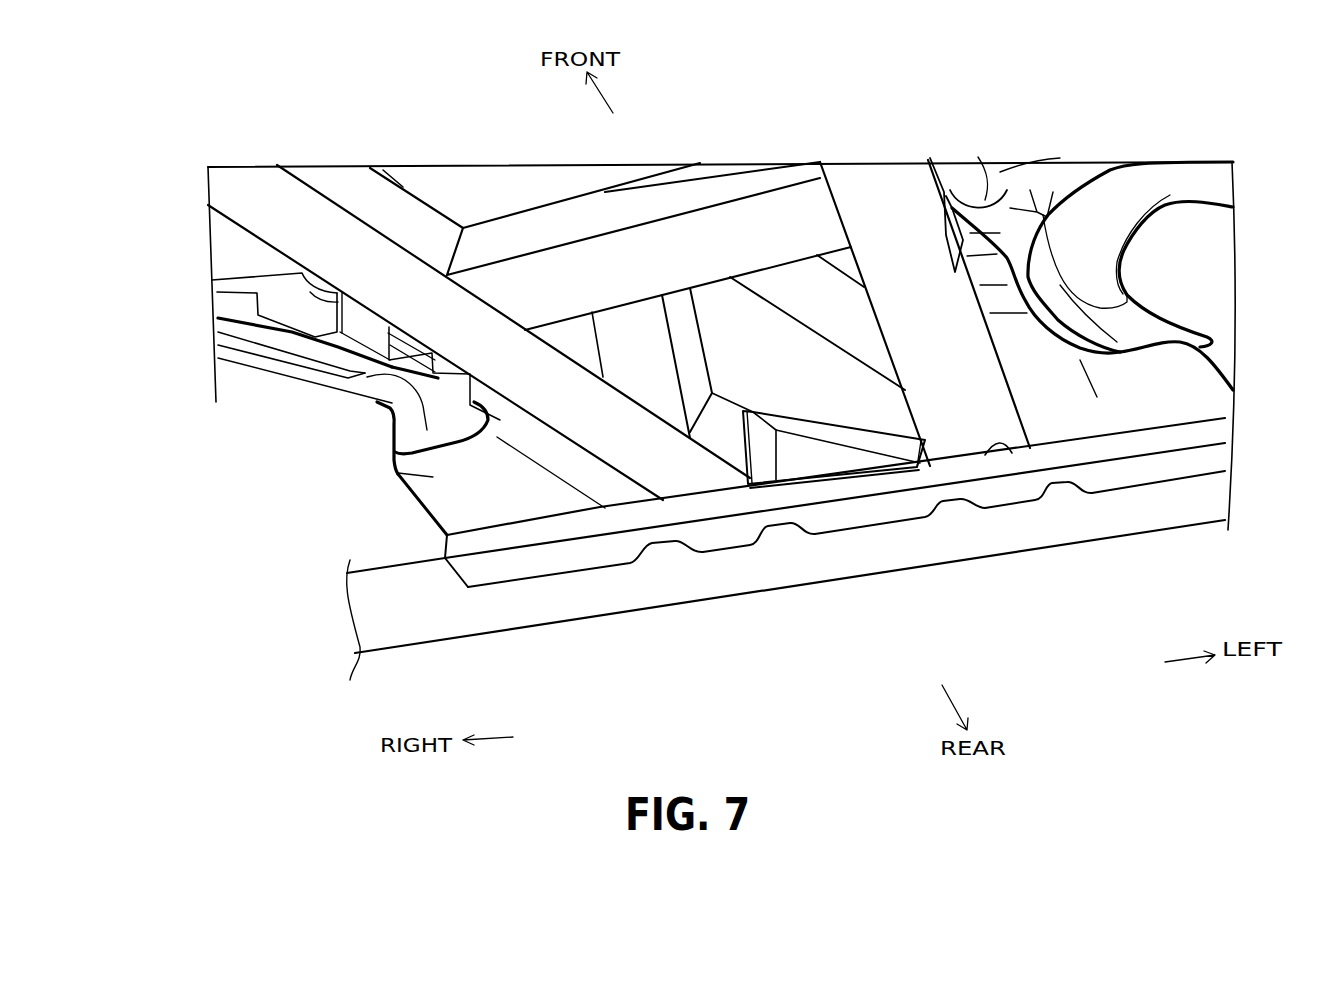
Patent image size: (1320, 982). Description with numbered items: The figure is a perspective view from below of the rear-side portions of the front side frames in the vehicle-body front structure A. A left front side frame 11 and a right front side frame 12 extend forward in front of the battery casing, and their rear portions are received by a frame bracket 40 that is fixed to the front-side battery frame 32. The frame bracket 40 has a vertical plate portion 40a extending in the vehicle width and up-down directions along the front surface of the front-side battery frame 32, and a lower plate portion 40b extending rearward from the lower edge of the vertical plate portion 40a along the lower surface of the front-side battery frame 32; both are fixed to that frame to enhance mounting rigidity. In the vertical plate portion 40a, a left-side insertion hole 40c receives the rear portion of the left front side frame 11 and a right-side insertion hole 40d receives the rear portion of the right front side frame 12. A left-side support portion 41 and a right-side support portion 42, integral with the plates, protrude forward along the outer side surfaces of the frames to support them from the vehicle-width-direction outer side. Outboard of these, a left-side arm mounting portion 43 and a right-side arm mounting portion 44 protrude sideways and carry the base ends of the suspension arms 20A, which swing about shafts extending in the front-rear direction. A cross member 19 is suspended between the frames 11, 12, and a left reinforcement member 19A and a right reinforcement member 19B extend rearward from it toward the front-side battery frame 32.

The left front side frame 11 is at (893, 180).
The right front side frame 12 is at (210, 183).
The cross member 19 is at (534, 212).
The left reinforcement member 19A is at (863, 350).
The right reinforcement member 19B is at (682, 348).
The suspension arm 20A is at (1148, 190).
The front-side battery frame 32 is at (410, 623).
The frame bracket 40 is at (848, 531).
The vertical plate portion 40a is at (445, 538).
The lower plate portion 40b is at (605, 545).
The left-side insertion hole 40c is at (1007, 450).
The right-side insertion hole 40d is at (710, 492).
The left-side support portion 41 is at (985, 267).
The right-side support portion 42 is at (432, 369).
The left-side arm mounting portion 43 is at (1153, 388).
The right-side arm mounting portion 44 is at (398, 473).
The vehicle-body front structure A is at (722, 113).